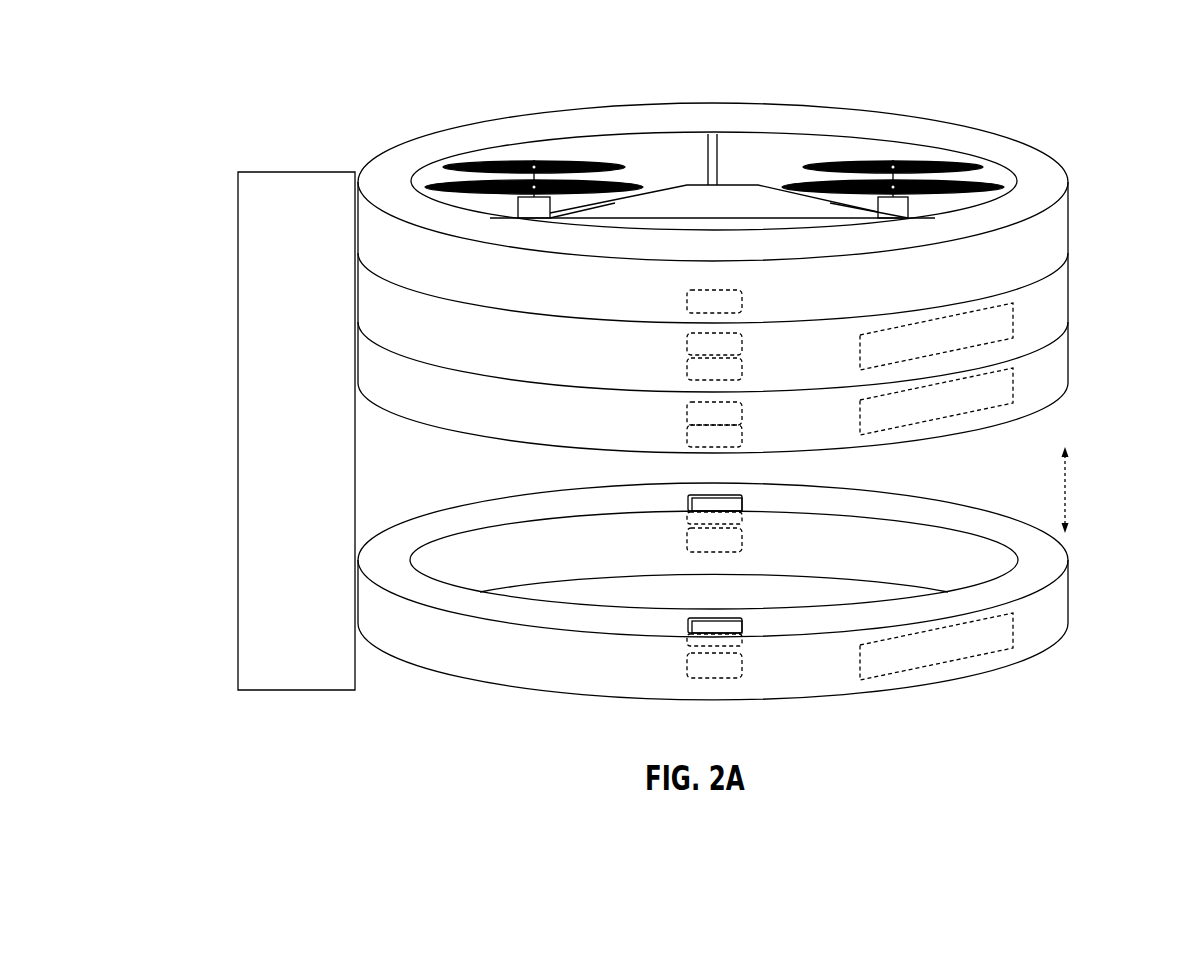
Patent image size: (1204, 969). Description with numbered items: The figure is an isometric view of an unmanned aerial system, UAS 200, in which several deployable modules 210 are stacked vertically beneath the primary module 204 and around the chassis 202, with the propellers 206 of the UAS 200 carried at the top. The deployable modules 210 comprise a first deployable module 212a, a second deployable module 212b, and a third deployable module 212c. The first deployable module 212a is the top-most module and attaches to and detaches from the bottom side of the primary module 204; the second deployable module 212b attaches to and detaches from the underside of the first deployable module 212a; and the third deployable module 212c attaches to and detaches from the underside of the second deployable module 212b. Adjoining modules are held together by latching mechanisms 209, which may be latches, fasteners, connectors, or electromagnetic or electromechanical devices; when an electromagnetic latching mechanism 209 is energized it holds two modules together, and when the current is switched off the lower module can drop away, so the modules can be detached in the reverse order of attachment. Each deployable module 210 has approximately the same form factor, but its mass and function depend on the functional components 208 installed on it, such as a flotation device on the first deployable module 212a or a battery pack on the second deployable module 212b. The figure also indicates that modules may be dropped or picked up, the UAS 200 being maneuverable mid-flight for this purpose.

The UAS 200 is at (700, 375).
The chassis 202 is at (712, 127).
The primary module 204 is at (717, 182).
The propellers 206 is at (650, 170).
The functional components 208 is at (1001, 491).
The latching mechanisms 209 is at (667, 473).
The deployable modules 210 is at (347, 257).
The first deployable module 212a is at (729, 180).
The second deployable module 212b is at (760, 353).
The third deployable module 212c is at (759, 591).